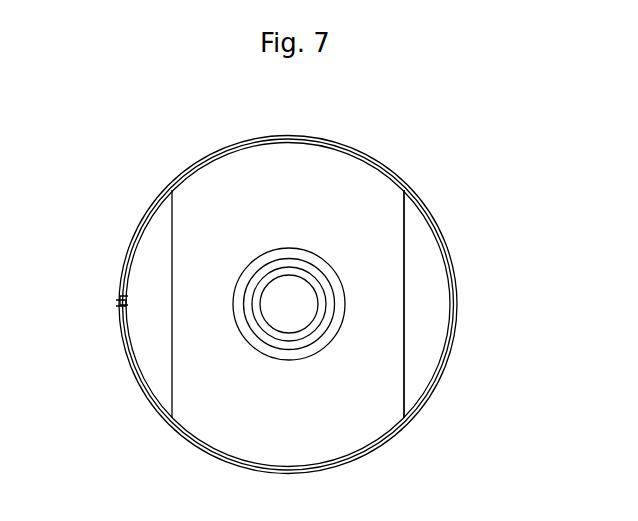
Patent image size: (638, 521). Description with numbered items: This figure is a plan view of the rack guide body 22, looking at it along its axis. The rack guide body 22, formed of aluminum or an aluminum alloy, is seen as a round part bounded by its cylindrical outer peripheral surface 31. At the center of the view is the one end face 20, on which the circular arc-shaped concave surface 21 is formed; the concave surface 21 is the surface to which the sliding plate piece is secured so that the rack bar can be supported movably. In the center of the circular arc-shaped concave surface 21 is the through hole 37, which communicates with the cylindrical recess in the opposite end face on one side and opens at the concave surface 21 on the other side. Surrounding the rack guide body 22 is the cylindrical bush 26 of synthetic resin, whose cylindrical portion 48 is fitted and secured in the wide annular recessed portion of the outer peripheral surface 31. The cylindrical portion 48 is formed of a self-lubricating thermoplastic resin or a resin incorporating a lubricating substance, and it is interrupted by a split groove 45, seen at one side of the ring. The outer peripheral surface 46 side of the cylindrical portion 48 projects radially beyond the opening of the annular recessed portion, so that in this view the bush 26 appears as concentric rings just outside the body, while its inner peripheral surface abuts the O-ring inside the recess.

The one end face 20 is at (142, 330).
The circular arc-shaped concave surface 21 is at (367, 432).
The rack guide body 22 is at (418, 240).
The cylindrical bush 26 is at (291, 138).
The cylindrical outer peripheral surface 31 is at (197, 172).
The through hole 37 is at (281, 311).
The split groove 45 is at (118, 303).
The outer peripheral surface 46 is at (395, 172).
The cylindrical portion 48 is at (452, 343).